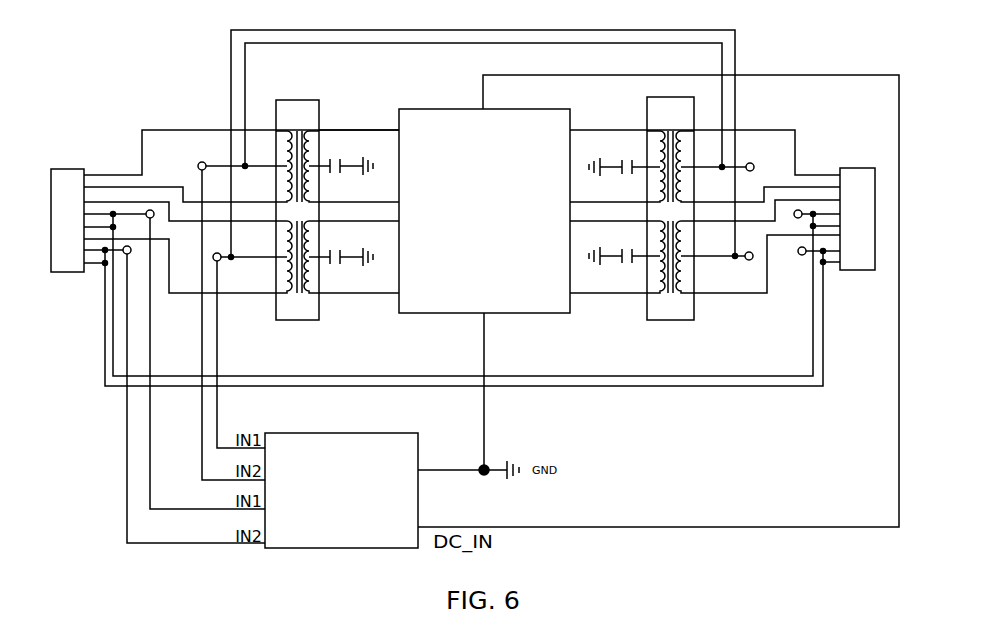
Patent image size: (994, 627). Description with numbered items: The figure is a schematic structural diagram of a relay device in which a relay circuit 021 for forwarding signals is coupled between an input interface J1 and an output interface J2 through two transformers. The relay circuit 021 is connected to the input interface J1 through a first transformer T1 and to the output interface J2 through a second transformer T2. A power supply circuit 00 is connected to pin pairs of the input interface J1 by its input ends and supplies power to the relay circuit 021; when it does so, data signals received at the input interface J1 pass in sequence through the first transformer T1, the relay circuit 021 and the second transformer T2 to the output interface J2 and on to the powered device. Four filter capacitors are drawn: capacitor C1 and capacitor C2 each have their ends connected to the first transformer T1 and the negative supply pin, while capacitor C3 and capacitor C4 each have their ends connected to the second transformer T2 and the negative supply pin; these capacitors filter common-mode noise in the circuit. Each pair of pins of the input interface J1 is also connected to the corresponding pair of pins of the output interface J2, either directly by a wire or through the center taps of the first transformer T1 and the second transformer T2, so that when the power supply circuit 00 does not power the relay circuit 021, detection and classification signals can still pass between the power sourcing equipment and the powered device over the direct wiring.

The relay circuit 021 is at (484, 211).
The power supply circuit 00 is at (341, 490).
The input interface J1 is at (67, 210).
The output interface J2 is at (857, 209).
The first transformer T1 is at (297, 210).
The second transformer T2 is at (670, 208).
The capacitor C1 is at (342, 169).
The capacitor C2 is at (342, 260).
The capacitor C3 is at (624, 170).
The capacitor C4 is at (624, 260).